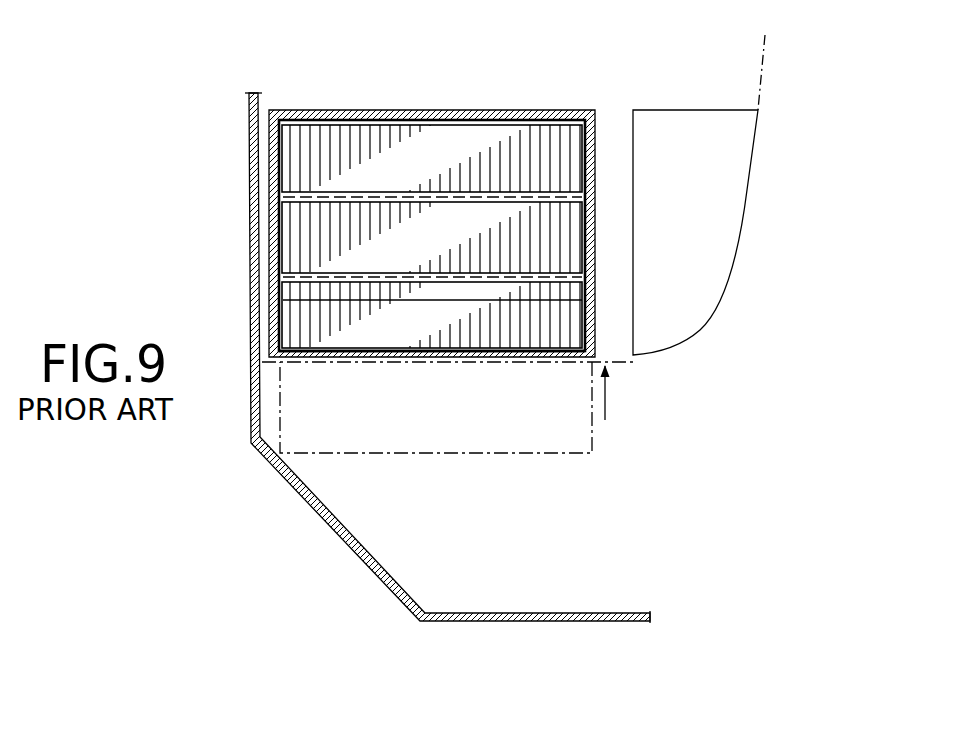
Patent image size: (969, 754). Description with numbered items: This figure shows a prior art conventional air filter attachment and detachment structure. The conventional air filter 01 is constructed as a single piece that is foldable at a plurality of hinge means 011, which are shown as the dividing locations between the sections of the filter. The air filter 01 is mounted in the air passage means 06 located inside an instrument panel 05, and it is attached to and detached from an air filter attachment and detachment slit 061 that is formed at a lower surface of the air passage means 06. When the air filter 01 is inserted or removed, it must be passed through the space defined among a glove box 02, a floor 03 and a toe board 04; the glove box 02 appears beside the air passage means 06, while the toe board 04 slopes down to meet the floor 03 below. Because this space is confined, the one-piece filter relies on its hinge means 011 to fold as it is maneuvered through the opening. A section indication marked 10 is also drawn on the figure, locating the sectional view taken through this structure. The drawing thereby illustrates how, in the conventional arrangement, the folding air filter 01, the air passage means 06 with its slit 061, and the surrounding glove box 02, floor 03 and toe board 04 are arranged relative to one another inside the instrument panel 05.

The air filter 01 is at (385, 126).
The hinge means 011 is at (313, 278).
The glove box 02 is at (728, 238).
The floor 03 is at (578, 613).
The toe board 04 is at (348, 533).
The instrument panel 05 is at (767, 57).
The air passage means 06 is at (485, 108).
The air filter attachment and detachment slit 061 is at (383, 358).
The section line 10 is at (563, 24).